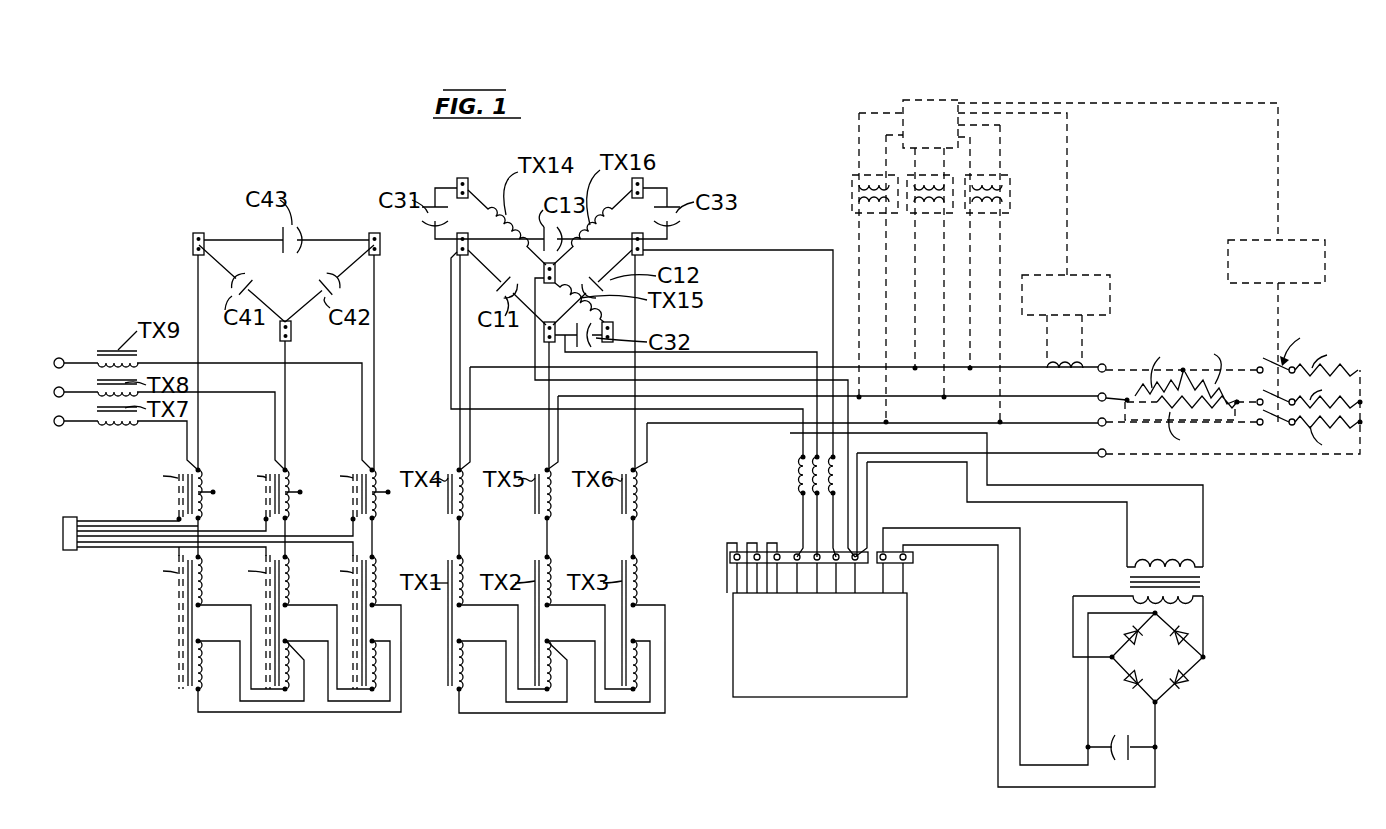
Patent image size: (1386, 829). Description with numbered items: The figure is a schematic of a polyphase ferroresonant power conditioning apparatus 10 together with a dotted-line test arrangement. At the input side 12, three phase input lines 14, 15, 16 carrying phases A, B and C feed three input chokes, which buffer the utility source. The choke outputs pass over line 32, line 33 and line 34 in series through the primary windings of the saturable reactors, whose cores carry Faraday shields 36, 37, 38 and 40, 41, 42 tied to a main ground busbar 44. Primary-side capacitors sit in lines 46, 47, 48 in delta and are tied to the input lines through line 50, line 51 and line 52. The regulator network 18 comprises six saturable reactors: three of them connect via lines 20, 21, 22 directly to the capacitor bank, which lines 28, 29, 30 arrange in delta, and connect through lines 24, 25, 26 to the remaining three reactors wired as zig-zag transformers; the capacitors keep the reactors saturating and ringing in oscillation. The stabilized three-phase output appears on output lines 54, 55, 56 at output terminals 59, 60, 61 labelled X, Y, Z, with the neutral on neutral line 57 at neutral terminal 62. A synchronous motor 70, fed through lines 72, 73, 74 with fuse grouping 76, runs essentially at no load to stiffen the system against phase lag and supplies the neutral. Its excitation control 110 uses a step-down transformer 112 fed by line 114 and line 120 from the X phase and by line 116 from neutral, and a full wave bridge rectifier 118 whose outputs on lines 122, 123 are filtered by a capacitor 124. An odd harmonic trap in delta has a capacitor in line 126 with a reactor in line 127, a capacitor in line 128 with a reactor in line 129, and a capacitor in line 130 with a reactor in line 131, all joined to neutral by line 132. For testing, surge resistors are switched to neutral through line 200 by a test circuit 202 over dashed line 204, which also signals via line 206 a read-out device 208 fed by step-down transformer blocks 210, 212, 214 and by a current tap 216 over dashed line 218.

The power conditioning apparatus 10 is at (234, 141).
The input side 12 is at (108, 326).
The three phase input line 14 is at (59, 427).
The three phase input line 15 is at (54, 395).
The three phase input line 16 is at (59, 358).
The regulator or synthesizing network 18 is at (512, 530).
The line 20 is at (460, 432).
The line 21 is at (546, 432).
The line 22 is at (632, 432).
The line 24 is at (455, 540).
The line 25 is at (547, 540).
The line 26 is at (633, 542).
The line 28 is at (478, 252).
The line 29 is at (497, 236).
The line 30 is at (632, 247).
The line 32 is at (160, 424).
The line 33 is at (228, 392).
The line 34 is at (240, 347).
The Faraday shield 36 is at (178, 497).
The Faraday shield 37 is at (266, 497).
The Faraday shield 38 is at (353, 497).
The Faraday shield 40 is at (178, 631).
The Faraday shield 41 is at (266, 592).
The Faraday shield 42 is at (353, 592).
The main ground busbar 44 is at (70, 552).
The line 46 is at (256, 296).
The line 47 is at (350, 262).
The line 48 is at (325, 240).
The line 50 is at (198, 293).
The line 51 is at (374, 352).
The line 52 is at (285, 398).
The output line 54 is at (1012, 369).
The output line 55 is at (960, 398).
The output line 56 is at (910, 412).
The neutral line 57 is at (1010, 453).
The output terminal 59 is at (1105, 364).
The output terminal 60 is at (1099, 397).
The output terminal 61 is at (1099, 422).
The neutral terminal 62 is at (1099, 453).
The synchronous motor 70 is at (832, 698).
The line 72 is at (705, 412).
The line 73 is at (735, 340).
The line 74 is at (738, 250).
The fuse grouping 76 is at (782, 478).
The control 110 is at (1335, 612).
The step-down transformer 112 is at (1203, 580).
The line 114 is at (1203, 515).
The line 116 is at (1127, 530).
The full wave bridge rectifier 118 is at (1197, 678).
The line 120 is at (1203, 625).
The line 122 is at (1155, 725).
The line 123 is at (1088, 715).
The capacitor 124 is at (1140, 735).
The line 126 is at (457, 185).
The line 127 is at (480, 195).
The line 128 is at (617, 327).
The line 129 is at (559, 317).
The line 130 is at (643, 185).
The line 131 is at (555, 262).
The line 132 is at (535, 350).
The line 200 is at (1295, 456).
The test circuit 202 is at (1298, 240).
The dashed line 204 is at (1278, 302).
The line 206 is at (1175, 103).
The read-out device 208 is at (925, 100).
The step-down transformer block 210 is at (928, 214).
The step-down transformer block 212 is at (1010, 195).
The step-down transformer block 214 is at (852, 190).
The current tap 216 is at (1087, 275).
The dashed line 218 is at (1067, 172).